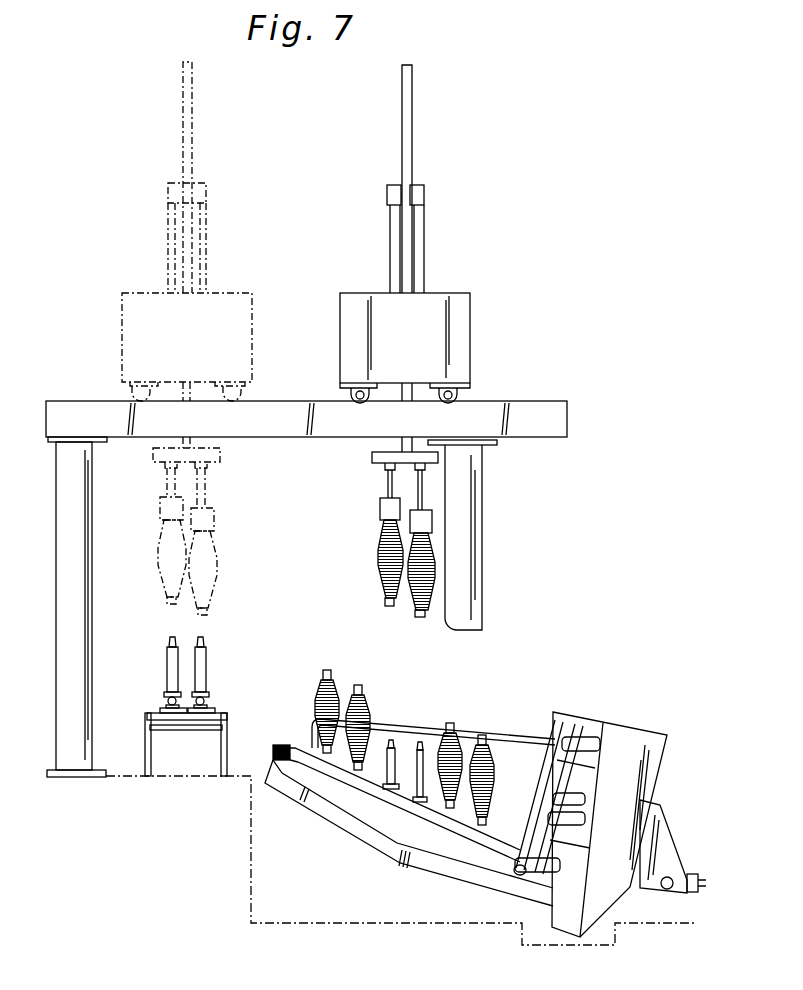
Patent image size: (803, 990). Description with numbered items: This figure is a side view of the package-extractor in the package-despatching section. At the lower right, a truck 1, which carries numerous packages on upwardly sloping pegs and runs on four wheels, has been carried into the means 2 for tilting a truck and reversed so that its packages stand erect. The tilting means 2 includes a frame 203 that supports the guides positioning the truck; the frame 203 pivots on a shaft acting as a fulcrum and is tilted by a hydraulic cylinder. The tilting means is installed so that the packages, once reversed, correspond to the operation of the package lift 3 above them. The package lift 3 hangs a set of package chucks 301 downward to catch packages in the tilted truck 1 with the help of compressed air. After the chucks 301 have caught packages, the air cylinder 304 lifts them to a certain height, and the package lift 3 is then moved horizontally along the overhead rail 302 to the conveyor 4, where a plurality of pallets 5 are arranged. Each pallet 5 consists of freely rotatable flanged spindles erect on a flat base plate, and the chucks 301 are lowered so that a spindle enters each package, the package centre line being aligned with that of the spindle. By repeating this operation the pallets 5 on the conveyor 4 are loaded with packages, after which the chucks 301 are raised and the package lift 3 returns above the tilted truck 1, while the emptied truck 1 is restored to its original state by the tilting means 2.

The truck 1 is at (353, 778).
The means for tilting a truck 2 is at (628, 721).
The package lift 3 is at (470, 336).
The conveyor 4 is at (220, 712).
The pallet 5 is at (162, 711).
The frame 203 is at (433, 868).
The package chucks 301 is at (380, 508).
The overhead rail beam 302 is at (535, 408).
The air cylinder 304 is at (423, 247).